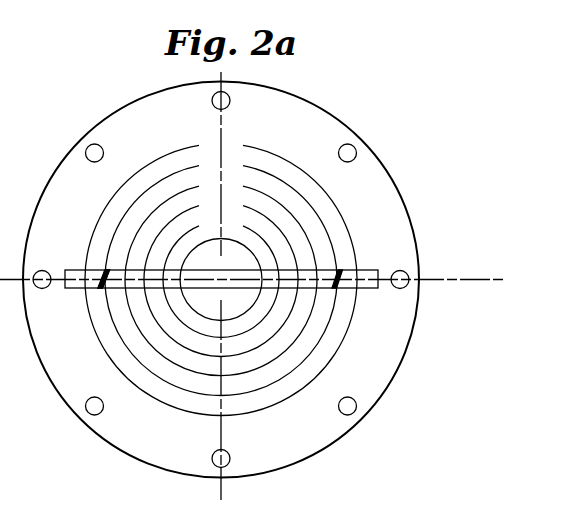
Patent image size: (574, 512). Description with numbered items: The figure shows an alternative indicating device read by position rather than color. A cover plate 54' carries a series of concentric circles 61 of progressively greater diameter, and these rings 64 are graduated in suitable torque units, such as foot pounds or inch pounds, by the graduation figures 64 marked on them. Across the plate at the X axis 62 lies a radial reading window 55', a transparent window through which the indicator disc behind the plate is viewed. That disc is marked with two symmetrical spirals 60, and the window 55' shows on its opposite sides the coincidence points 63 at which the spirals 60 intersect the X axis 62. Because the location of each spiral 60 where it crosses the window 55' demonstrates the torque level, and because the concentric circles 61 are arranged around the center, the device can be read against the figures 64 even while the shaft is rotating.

The cover plate 54' is at (232, 280).
The radial reading window 55' is at (234, 297).
The spirals 60 is at (103, 272).
The concentric circles 61 is at (345, 221).
The X axis 62 is at (432, 277).
The coincidence points 63 is at (99, 288).
The figures 64 is at (235, 140).